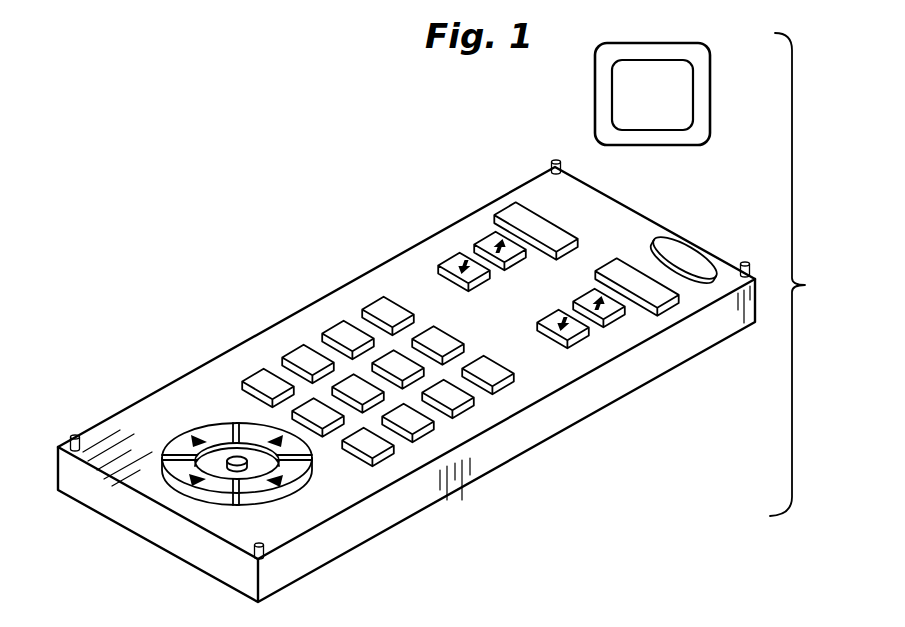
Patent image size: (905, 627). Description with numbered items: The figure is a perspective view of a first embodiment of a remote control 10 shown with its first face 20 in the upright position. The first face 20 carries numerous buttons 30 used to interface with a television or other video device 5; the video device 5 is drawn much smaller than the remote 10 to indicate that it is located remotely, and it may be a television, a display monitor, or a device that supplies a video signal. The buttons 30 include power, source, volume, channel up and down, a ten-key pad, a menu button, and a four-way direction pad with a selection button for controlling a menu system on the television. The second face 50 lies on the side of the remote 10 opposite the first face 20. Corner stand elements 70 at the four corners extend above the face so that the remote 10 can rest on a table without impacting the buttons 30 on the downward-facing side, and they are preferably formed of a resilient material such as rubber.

The video device 5 is at (708, 94).
The remote control 10 is at (700, 219).
The first face 20 is at (617, 211).
The buttons 30 is at (520, 384).
The second face 50 is at (511, 468).
The corner stand elements 70 is at (556, 160).